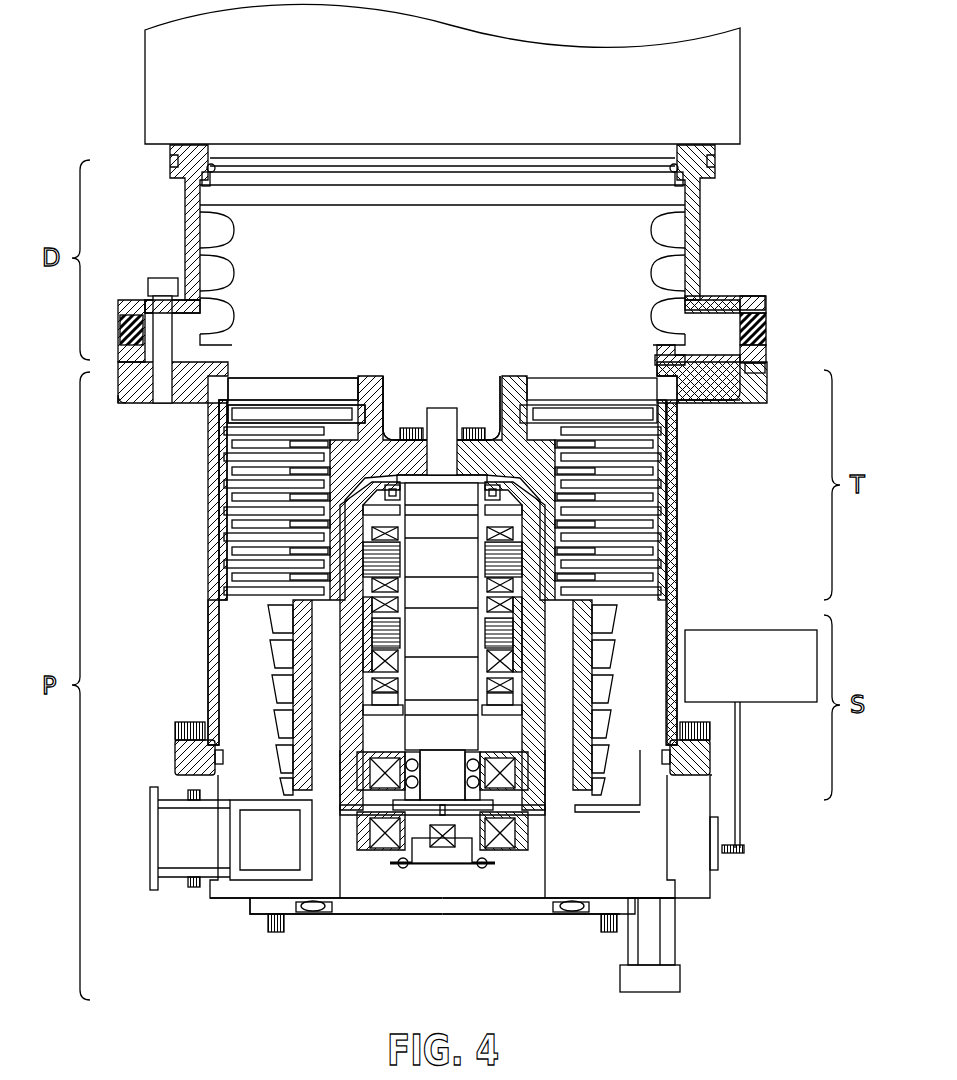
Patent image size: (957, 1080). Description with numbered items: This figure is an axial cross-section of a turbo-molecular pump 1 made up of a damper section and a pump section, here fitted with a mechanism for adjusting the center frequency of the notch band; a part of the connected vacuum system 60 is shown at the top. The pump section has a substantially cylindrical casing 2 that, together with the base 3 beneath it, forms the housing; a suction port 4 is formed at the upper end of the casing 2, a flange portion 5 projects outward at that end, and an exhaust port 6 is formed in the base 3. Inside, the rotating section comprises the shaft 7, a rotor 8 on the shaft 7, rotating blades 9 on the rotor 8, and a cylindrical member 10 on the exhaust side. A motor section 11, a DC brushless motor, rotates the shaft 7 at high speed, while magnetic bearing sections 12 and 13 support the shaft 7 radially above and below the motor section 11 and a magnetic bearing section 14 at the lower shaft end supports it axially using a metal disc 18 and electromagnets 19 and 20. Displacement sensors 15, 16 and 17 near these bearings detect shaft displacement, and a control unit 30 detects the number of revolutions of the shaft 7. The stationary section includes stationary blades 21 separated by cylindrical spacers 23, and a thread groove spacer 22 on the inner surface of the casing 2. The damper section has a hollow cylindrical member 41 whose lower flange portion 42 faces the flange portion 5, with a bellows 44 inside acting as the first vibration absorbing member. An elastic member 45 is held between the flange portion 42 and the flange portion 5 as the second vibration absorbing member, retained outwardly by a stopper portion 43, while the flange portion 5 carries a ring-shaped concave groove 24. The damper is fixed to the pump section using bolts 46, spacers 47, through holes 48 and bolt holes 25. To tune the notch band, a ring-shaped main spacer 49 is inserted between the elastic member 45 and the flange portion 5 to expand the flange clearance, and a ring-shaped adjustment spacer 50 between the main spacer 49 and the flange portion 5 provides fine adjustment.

The turbo-molecular pump 1 is at (772, 215).
The casing 2 is at (677, 462).
The base 3 is at (712, 884).
The suction port 4 is at (438, 352).
The flange portion 5 is at (712, 400).
The exhaust port 6 is at (148, 845).
The shaft 7 is at (448, 410).
The rotor 8 is at (390, 386).
The rotating blades 9 is at (318, 380).
The cylindrical member 10 is at (290, 684).
The motor section 11 is at (356, 640).
The magnetic bearing section 12 is at (356, 553).
The magnetic bearing section 13 is at (356, 697).
The magnetic bearing section 14 is at (366, 860).
The displacement sensor 15 is at (356, 512).
The displacement sensor 16 is at (356, 736).
The displacement sensor 17 is at (437, 850).
The metal disc 18 is at (463, 812).
The electromagnet 19 is at (520, 780).
The electromagnet 20 is at (520, 800).
The stationary blades 21 is at (232, 408).
The thread groove spacer 22 is at (232, 622).
The spacers 23 is at (222, 436).
The concave groove 24 is at (735, 382).
The bolt holes 25 is at (135, 392).
The control unit 30 is at (765, 703).
The cylindrical member 41 is at (697, 240).
The flange portion 42 is at (745, 300).
The stopper portion 43 is at (768, 305).
The bellows 44 is at (670, 270).
The elastic member 45 is at (768, 322).
The bolts 46 is at (165, 276).
The spacers 47 is at (148, 300).
The through holes 48 is at (122, 300).
The main spacer 49 is at (768, 347).
The adjustment spacer 50 is at (766, 362).
The vacuum system 60 is at (740, 122).